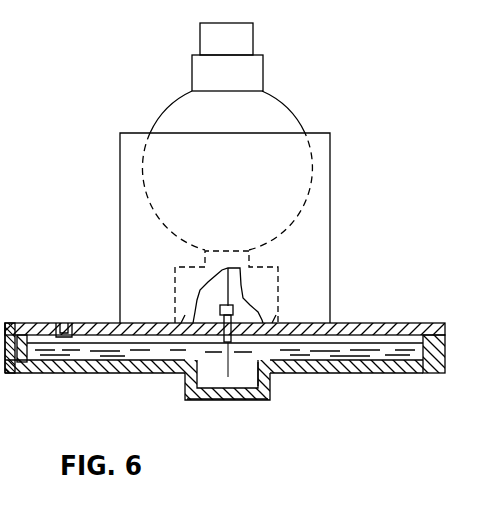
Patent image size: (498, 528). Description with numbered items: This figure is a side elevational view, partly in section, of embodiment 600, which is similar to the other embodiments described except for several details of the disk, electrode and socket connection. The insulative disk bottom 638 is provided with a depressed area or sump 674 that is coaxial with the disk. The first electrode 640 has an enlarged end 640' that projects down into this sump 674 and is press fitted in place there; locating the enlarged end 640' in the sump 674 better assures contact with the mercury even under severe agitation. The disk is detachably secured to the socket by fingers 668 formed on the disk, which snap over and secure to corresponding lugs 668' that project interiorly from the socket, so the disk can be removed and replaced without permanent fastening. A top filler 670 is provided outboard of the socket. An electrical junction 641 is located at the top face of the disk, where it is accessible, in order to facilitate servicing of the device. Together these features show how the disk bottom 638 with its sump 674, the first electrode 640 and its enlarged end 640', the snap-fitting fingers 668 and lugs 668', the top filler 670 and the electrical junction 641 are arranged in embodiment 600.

The embodiment 600 is at (306, 44).
The electrical junction 641 is at (233, 305).
The fingers 668 is at (282, 293).
The lugs 668' is at (276, 287).
The top filler 670 is at (63, 322).
The insulative disk bottom 638 is at (80, 373).
The first electrode 640 is at (270, 380).
The enlarged end of first electrode 640' is at (292, 389).
The sump 674 is at (205, 400).